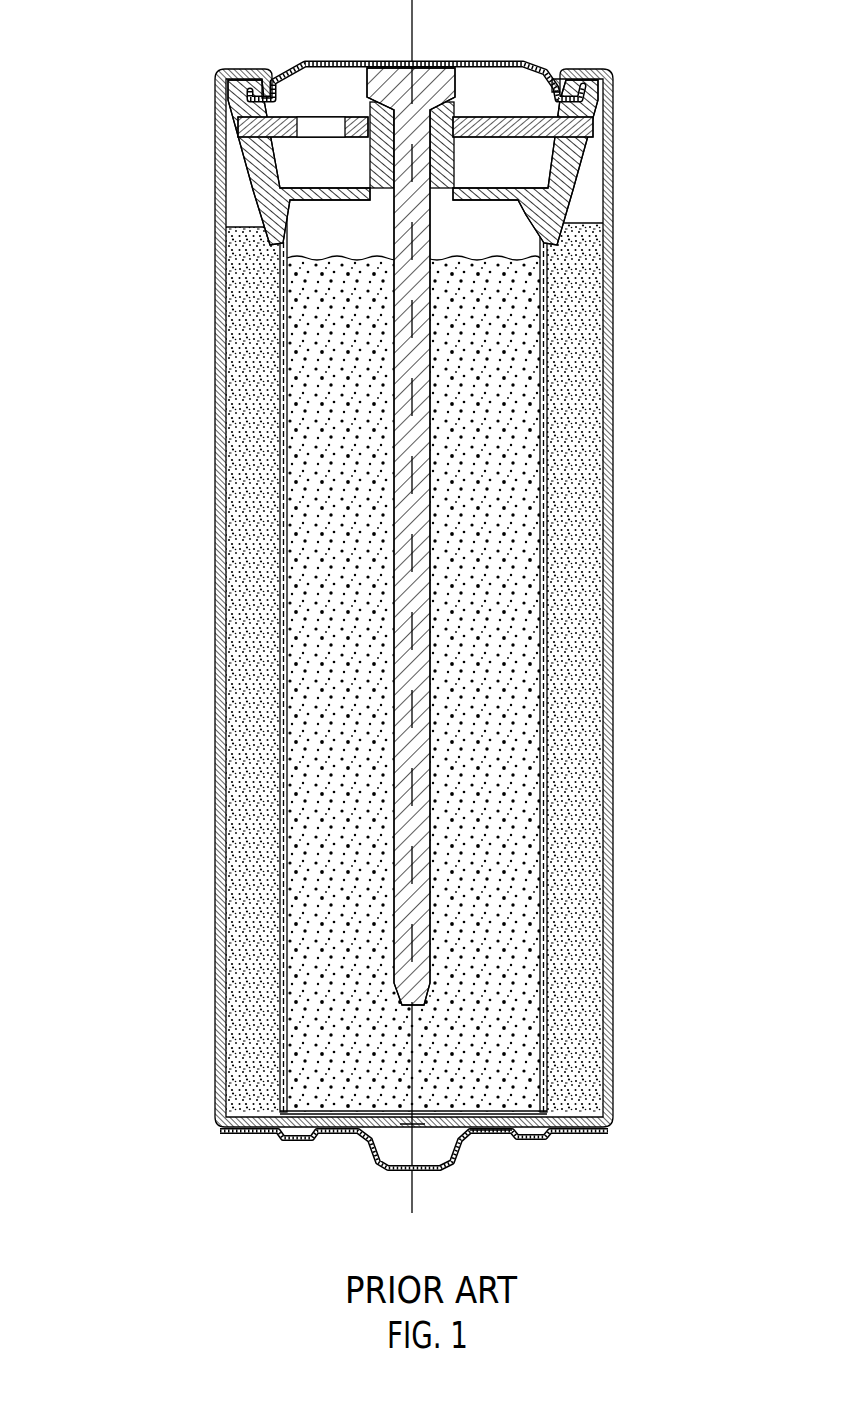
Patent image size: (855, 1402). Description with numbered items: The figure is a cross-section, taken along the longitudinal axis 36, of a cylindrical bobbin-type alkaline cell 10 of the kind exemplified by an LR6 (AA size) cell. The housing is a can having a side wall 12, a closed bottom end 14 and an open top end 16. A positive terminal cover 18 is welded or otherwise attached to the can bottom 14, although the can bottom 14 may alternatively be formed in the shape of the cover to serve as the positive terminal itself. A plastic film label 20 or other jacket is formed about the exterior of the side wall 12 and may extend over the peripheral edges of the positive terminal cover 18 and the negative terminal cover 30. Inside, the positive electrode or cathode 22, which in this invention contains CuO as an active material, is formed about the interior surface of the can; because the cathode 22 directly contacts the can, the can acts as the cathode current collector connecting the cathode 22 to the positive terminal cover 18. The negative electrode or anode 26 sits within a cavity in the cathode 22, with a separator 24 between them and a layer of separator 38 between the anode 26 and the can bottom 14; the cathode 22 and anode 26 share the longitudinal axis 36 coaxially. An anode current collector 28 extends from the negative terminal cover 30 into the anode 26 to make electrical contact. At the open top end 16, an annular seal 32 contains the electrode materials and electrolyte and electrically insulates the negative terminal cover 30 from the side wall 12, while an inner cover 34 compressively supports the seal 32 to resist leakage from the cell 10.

The cell 10 is at (471, 608).
The side wall 12 is at (613, 355).
The closed bottom end 14 is at (417, 1123).
The open top end 16 is at (451, 122).
The positive terminal cover 18 is at (397, 1168).
The plastic film label 20 is at (613, 293).
The positive electrode (cathode) 22 is at (590, 488).
The separator 24 is at (547, 587).
The negative electrode (anode) 26 is at (523, 678).
The anode current collector 28 is at (416, 62).
The negative terminal cover 30 is at (475, 62).
The annular seal 32 is at (604, 142).
The inner cover 34 is at (510, 117).
The longitudinal axis 36 is at (407, 33).
The layer of separator 38 is at (497, 1130).